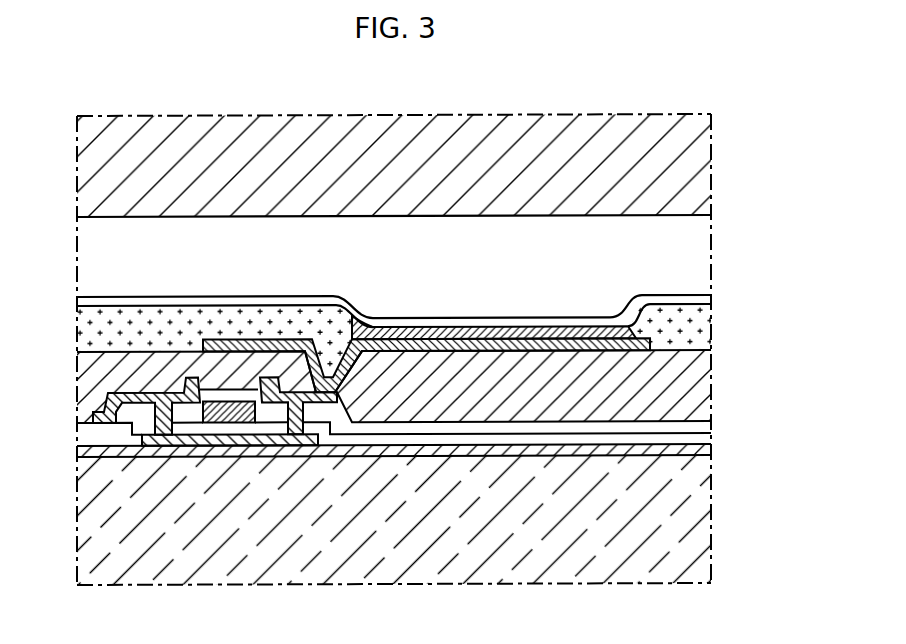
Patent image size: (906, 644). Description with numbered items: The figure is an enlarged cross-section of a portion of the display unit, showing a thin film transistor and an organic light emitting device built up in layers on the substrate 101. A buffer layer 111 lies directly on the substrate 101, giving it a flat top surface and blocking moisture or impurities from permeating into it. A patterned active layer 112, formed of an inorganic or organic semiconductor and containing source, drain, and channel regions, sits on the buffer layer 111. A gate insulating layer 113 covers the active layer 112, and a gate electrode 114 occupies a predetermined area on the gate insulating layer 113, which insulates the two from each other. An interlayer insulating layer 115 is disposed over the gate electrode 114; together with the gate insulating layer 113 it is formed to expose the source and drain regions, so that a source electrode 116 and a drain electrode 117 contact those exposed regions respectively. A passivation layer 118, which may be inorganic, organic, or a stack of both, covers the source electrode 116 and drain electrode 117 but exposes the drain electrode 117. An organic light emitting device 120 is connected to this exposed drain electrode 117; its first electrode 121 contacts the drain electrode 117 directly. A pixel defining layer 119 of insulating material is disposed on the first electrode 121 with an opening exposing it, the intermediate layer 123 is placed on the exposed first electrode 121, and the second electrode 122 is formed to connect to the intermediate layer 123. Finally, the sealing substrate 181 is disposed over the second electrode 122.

The substrate 101 is at (711, 522).
The buffer layer 111 is at (711, 452).
The active layer 112 is at (183, 443).
The gate insulating layer 113 is at (711, 438).
The gate electrode 114 is at (227, 421).
The interlayer insulating layer 115 is at (711, 427).
The source electrode 116 is at (100, 404).
The drain electrode 117 is at (294, 410).
The passivation layer 118 is at (711, 390).
The pixel defining layer 119 is at (711, 327).
The organic light emitting device 120 is at (405, 266).
The first electrode 121 is at (421, 337).
The second electrode 122 is at (538, 322).
The intermediate layer 123 is at (481, 330).
The sealing substrate 181 is at (711, 164).